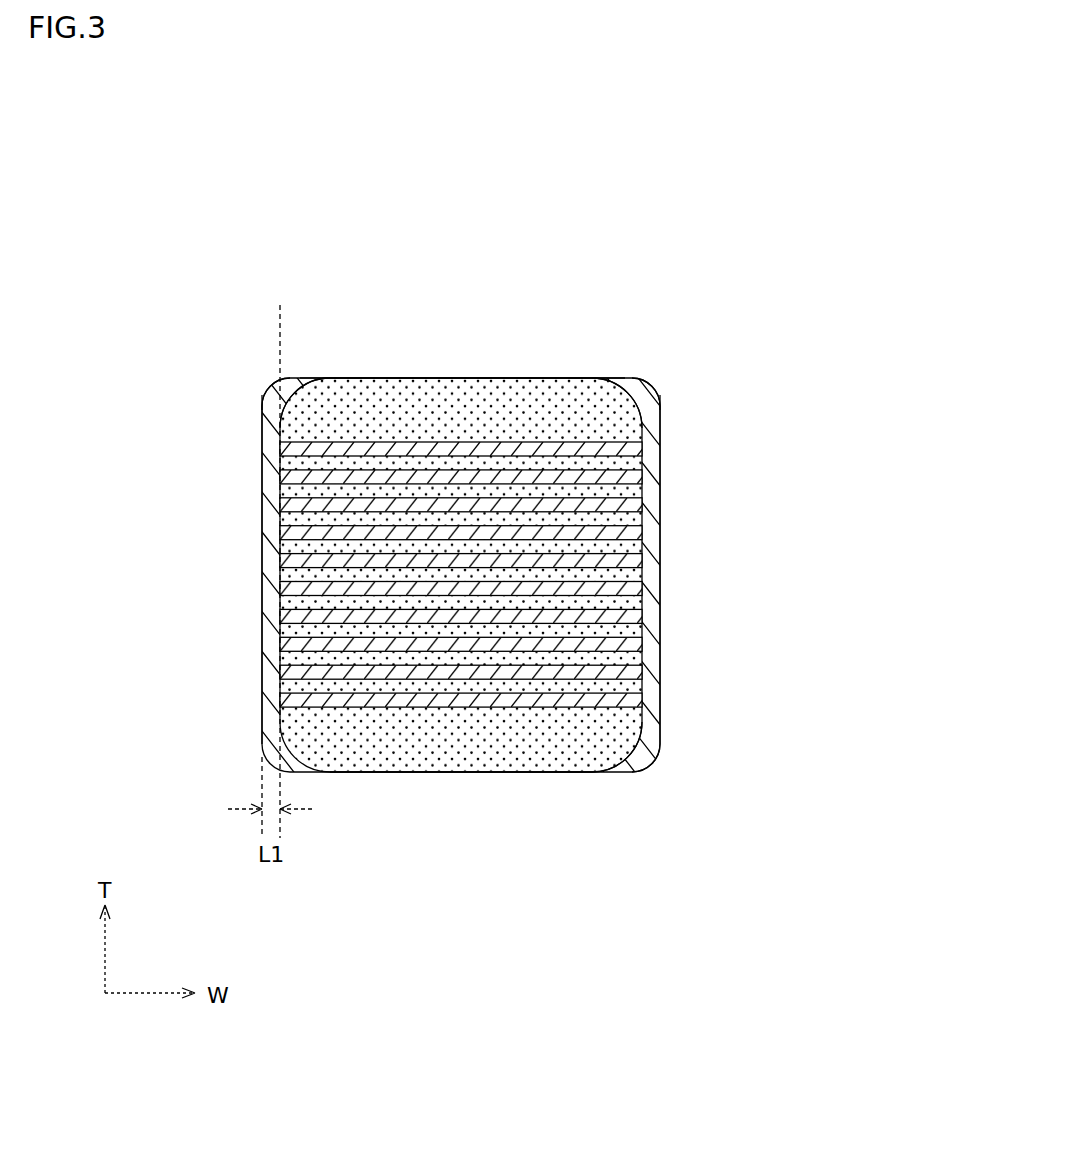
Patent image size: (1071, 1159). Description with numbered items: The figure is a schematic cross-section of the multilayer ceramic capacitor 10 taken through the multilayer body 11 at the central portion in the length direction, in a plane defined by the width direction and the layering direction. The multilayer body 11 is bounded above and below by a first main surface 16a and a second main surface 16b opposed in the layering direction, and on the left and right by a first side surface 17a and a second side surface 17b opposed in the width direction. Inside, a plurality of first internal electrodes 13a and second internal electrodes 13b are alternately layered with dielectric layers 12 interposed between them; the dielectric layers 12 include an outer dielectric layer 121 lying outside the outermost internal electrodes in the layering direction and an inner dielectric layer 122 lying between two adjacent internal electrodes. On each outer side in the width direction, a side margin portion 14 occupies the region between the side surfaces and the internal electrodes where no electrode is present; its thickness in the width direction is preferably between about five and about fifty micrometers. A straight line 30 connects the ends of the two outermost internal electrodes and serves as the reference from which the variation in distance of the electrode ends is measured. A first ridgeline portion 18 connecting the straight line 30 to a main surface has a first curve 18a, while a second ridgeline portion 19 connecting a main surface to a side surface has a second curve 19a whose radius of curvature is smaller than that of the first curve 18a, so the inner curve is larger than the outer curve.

The multilayer ceramic capacitor 10 is at (617, 225).
The multilayer body 11 is at (375, 378).
The dielectric layers 12 is at (461, 535).
The outer dielectric layer 121 is at (502, 395).
The inner dielectric layer 122 is at (567, 497).
The first internal electrode 13a is at (454, 440).
The second internal electrode 13b is at (390, 707).
The side margin portion 14 is at (272, 545).
The first main surface 16a is at (425, 378).
The second main surface 16b is at (548, 772).
The first side surface 17a is at (262, 594).
The second side surface 17b is at (660, 592).
The first ridgeline portion 18 is at (302, 390).
The first curve 18a is at (310, 382).
The second ridgeline portion 19 is at (274, 388).
The second curve 19a is at (265, 393).
The straight line 30 is at (280, 305).